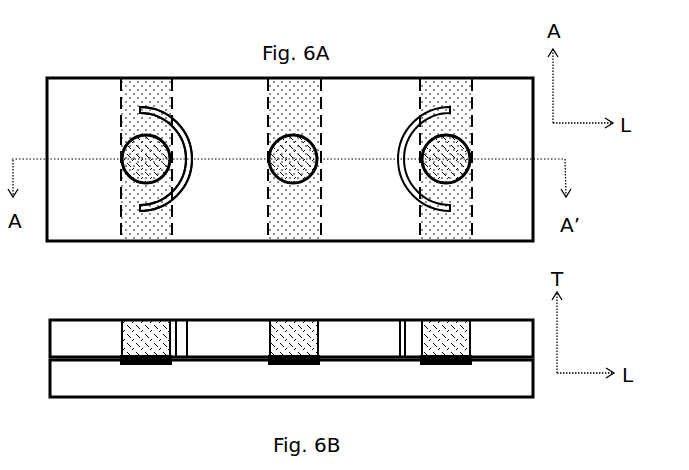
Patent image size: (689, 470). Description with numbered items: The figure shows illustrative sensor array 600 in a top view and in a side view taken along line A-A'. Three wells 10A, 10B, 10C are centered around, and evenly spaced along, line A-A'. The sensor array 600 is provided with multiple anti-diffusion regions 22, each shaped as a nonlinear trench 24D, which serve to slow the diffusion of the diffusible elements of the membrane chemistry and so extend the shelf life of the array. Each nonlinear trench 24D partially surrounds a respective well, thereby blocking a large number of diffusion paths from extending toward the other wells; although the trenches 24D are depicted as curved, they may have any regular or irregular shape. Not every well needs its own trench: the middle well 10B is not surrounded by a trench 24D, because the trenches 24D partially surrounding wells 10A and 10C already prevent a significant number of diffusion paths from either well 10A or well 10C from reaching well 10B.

In FIG. 6A, the sensor array 600 is at (77, 55).
In FIG. 6B, the sensor array 600 is at (80, 433).
In FIG. 6A, the well 10A is at (128, 180).
In FIG. 6B, the well 10A is at (137, 318).
In FIG. 6A, the well 10B is at (282, 180).
In FIG. 6B, the well 10B is at (292, 320).
In FIG. 6A, the well 10C is at (443, 175).
In FIG. 6B, the well 10C is at (450, 318).
In FIG. 6A, the anti-diffusion region 22 is at (188, 185).
In FIG. 6B, the anti-diffusion region 22 is at (188, 320).
In FIG. 6A, the nonlinear trench 24D is at (295, 159).
In FIG. 6B, the nonlinear trench 24D is at (181, 338).